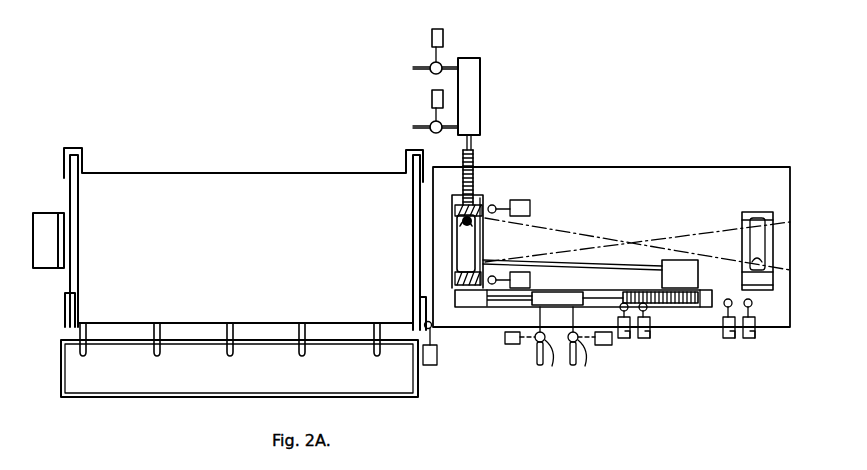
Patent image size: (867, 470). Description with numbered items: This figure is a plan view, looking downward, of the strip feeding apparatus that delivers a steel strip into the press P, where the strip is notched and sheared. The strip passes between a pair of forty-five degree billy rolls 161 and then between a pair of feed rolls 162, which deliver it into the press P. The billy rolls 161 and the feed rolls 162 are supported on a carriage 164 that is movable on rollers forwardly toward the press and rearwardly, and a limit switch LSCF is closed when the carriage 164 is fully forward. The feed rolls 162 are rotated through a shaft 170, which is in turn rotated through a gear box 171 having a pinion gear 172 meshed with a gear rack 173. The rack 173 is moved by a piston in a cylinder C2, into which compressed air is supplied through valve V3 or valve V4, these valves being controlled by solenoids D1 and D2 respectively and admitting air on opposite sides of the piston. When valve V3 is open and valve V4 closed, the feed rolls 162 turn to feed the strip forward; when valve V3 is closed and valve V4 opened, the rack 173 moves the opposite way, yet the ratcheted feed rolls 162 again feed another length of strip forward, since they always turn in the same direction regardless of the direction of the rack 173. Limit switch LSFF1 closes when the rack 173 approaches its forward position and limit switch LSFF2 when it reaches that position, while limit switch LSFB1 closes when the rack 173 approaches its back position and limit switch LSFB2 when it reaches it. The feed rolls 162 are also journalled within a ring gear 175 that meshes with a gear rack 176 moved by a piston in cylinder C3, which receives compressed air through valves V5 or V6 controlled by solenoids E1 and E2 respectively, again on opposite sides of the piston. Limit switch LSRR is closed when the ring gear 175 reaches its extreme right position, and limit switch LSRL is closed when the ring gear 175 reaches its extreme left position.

The 45° billy rolls 161 is at (757, 240).
The feed rolls 162 is at (476, 250).
The carriage 164 is at (640, 167).
The shaft 170 is at (588, 263).
The gear box 171 is at (691, 283).
The pinion gear 172 is at (680, 308).
The gear rack 173 is at (703, 292).
The ring gear 175 is at (480, 212).
The gear rack 176 is at (474, 158).
The cylinder C2 is at (583, 292).
The cylinder C3 is at (480, 95).
The solenoid E1 is at (432, 99).
The solenoid E2 is at (443, 38).
The valve V3 is at (575, 346).
The valve V4 is at (542, 346).
The valve V5 is at (435, 135).
The valve V6 is at (431, 73).
The solenoid D1 is at (605, 345).
The solenoid D2 is at (509, 344).
The limit switch LSCF is at (437, 352).
The limit switch LSRR is at (530, 208).
The limit switch LSRL is at (530, 280).
The limit switch LSFF1 is at (648, 338).
The limit switch LSFF2 is at (628, 338).
The limit switch LSFB1 is at (732, 338).
The limit switch LSFB2 is at (752, 338).
The press P is at (238, 287).